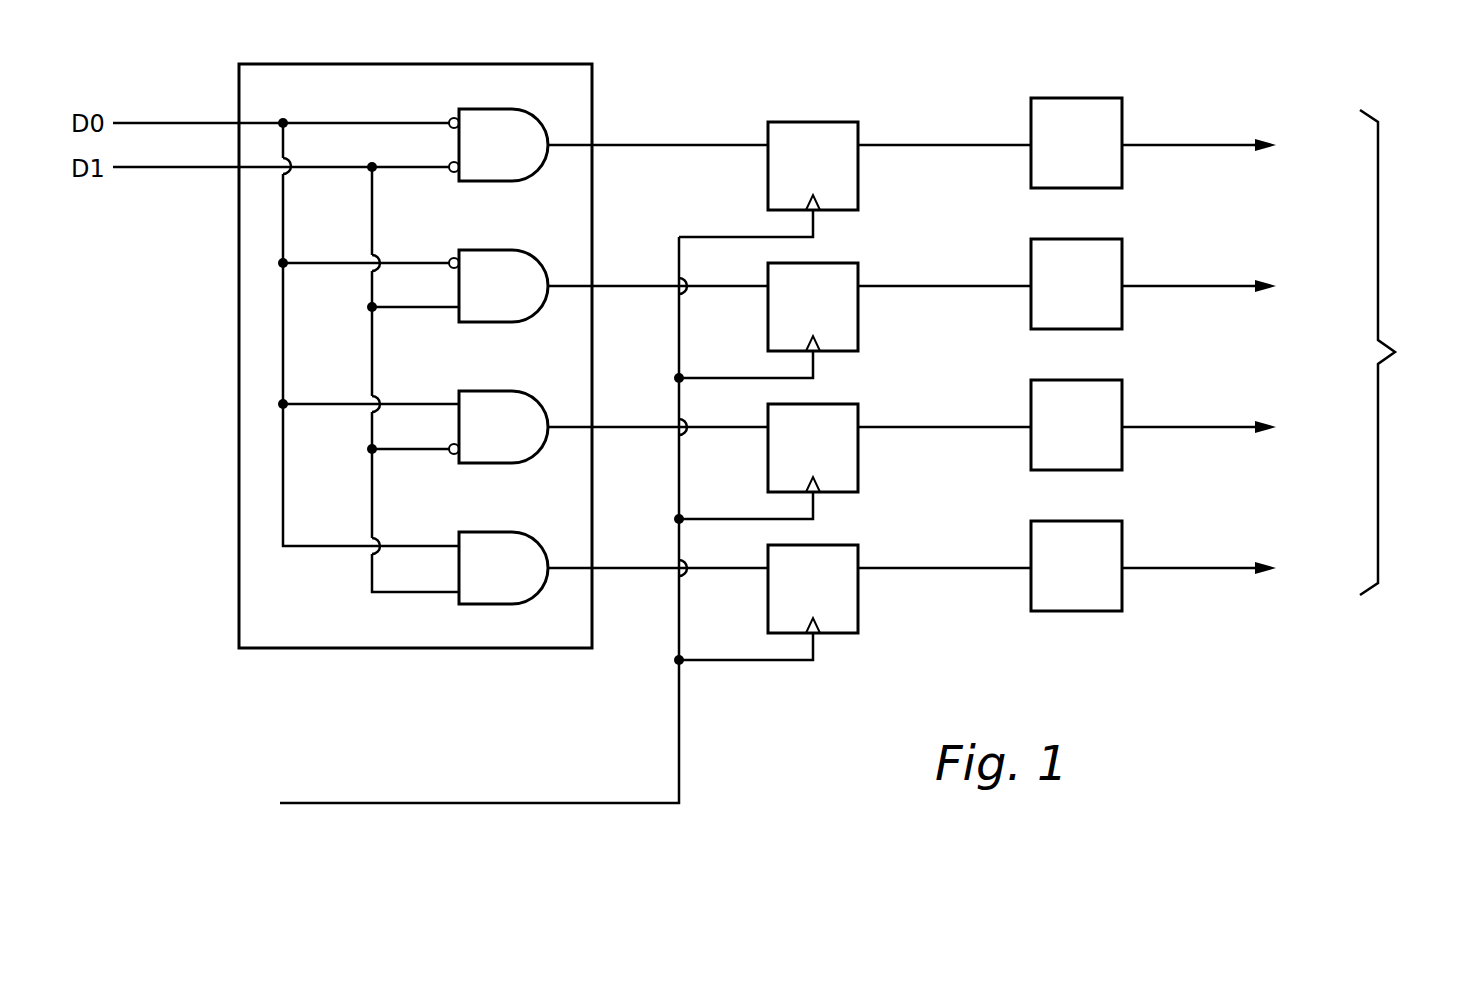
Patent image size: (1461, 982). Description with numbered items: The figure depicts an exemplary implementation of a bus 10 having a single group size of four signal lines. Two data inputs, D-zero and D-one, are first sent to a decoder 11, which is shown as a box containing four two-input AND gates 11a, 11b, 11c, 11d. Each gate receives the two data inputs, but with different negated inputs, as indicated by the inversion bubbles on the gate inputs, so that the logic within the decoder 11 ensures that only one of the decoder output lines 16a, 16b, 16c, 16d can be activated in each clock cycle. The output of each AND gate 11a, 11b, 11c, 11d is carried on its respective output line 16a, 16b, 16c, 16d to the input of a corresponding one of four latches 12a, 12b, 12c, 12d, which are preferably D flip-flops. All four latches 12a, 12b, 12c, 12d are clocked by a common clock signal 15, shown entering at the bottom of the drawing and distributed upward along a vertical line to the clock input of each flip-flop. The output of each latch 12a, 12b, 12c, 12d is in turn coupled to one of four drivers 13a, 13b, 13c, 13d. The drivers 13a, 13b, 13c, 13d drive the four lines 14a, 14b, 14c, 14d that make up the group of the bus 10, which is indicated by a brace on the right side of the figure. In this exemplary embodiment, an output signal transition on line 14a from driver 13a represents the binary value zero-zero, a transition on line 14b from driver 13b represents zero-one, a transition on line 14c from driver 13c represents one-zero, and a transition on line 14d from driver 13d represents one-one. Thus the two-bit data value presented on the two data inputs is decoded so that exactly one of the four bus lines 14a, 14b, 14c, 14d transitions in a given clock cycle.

The bus 10 is at (1399, 352).
The decoder 11 is at (286, 101).
The two-input AND gate 11a is at (530, 157).
The two-input AND gate 11b is at (530, 298).
The two-input AND gate 11c is at (530, 439).
The two-input AND gate 11d is at (530, 580).
The latch 12a is at (841, 178).
The latch 12b is at (841, 319).
The latch 12c is at (841, 460).
The latch 12d is at (841, 601).
The driver 13a is at (1104, 155).
The driver 13b is at (1104, 296).
The driver 13c is at (1104, 437).
The driver 13d is at (1104, 578).
The line 14a is at (1186, 145).
The line 14b is at (1186, 286).
The line 14c is at (1186, 427).
The line 14d is at (1186, 568).
The clock signal 15 is at (473, 804).
The output line 16a is at (657, 111).
The output line 16b is at (657, 252).
The output line 16c is at (657, 393).
The output line 16d is at (657, 534).